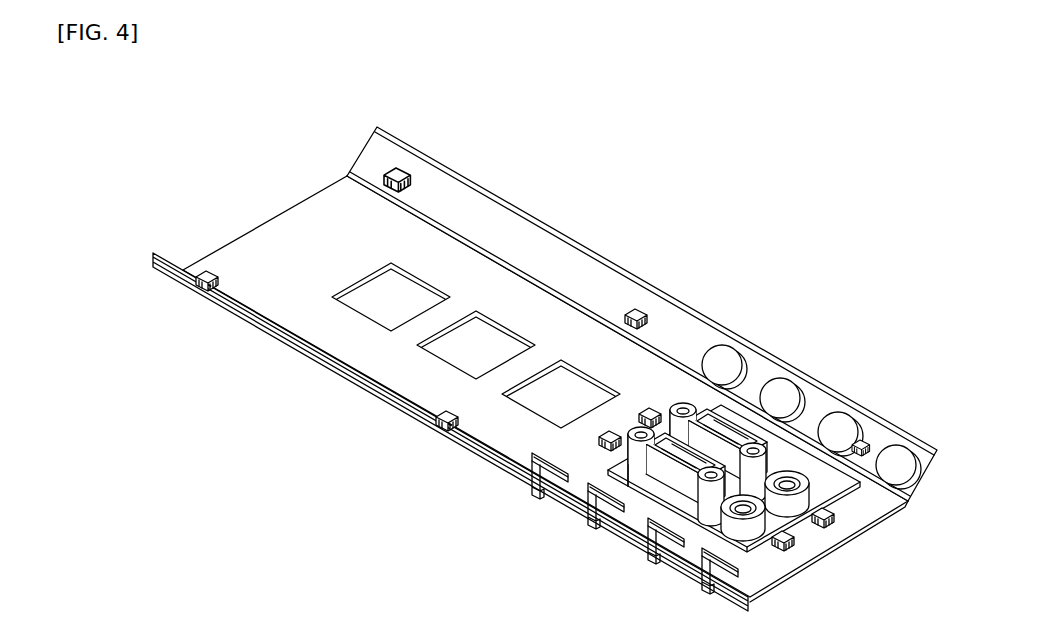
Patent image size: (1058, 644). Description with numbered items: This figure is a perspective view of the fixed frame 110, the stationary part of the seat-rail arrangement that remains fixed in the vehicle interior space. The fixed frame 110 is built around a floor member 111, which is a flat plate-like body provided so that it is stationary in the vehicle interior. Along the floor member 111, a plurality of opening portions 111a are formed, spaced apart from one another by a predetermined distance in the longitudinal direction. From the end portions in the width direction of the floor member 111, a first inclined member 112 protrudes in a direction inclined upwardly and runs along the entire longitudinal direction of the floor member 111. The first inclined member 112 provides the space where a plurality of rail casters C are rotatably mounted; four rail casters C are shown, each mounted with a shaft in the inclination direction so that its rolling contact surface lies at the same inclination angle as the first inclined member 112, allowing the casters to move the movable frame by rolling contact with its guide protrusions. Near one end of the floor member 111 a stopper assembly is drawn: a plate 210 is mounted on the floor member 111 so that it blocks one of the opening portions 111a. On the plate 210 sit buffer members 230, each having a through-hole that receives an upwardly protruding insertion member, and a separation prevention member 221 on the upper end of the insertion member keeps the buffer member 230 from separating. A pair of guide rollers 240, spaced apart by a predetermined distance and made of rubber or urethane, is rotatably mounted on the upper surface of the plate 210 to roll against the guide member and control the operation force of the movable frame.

The fixed frame 110 is at (652, 175).
The floor member 111 is at (305, 225).
The opening portions 111a is at (564, 392).
The first inclined member 112 is at (472, 207).
The rail casters C is at (720, 358).
The plate 210 is at (783, 522).
The separation prevention member 221 is at (720, 425).
The buffer member 230 is at (755, 445).
The guide rollers 240 is at (807, 497).